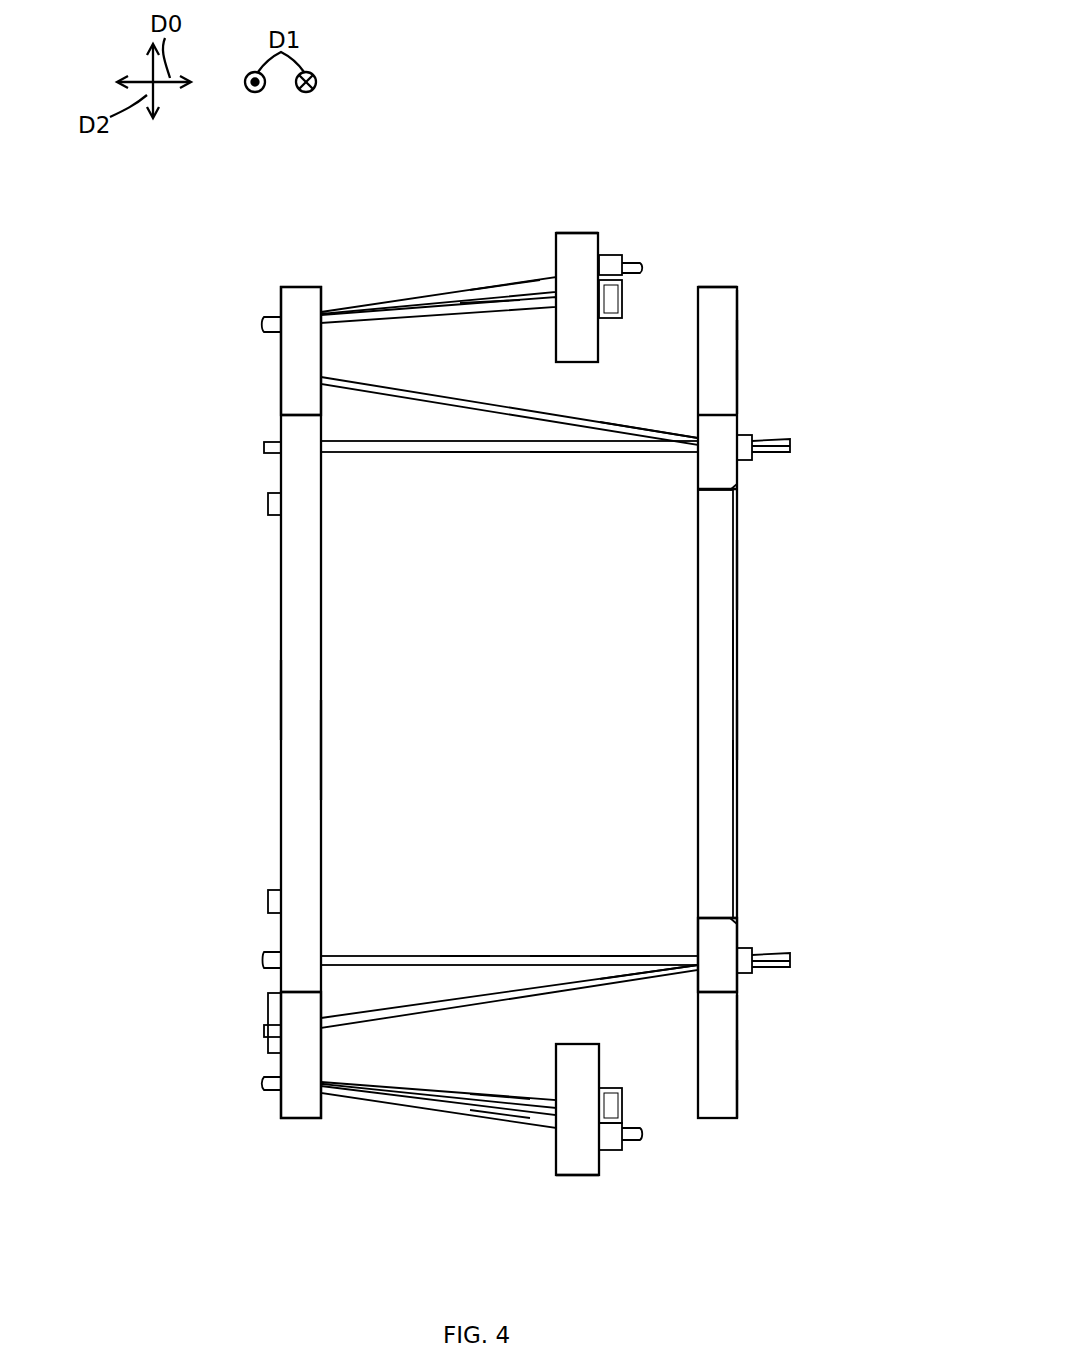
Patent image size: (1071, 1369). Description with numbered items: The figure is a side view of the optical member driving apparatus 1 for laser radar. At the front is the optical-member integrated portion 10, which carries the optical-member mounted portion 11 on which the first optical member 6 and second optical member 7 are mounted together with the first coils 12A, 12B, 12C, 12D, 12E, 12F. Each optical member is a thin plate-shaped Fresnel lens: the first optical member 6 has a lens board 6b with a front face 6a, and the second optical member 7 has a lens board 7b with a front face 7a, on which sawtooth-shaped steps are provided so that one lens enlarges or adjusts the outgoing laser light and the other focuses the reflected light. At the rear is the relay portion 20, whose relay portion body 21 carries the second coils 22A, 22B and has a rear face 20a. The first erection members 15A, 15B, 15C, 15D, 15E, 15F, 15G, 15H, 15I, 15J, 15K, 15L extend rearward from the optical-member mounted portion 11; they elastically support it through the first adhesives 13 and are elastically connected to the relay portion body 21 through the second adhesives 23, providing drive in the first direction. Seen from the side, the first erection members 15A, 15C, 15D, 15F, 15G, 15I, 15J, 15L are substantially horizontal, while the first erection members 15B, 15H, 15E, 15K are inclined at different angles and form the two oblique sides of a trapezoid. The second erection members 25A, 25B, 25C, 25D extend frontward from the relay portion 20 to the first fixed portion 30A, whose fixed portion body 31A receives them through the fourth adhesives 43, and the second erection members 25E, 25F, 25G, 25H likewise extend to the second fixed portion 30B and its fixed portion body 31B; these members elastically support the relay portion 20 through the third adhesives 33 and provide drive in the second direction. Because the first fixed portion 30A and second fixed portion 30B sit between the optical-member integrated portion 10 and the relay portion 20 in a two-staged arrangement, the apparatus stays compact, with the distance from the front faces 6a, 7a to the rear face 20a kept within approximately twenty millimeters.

The optical member driving apparatus for laser radar 1 is at (808, 222).
The first optical member 6 is at (712, 607).
The front face of first optical member 6a is at (737, 573).
The lens board of first optical member 6b is at (716, 648).
The second optical member 7 is at (716, 762).
The front face of second optical member 7a is at (737, 724).
The lens board of second optical member 7b is at (716, 802).
The optical-member integrated portion 10 is at (742, 520).
The optical-member mounted portion 11 is at (720, 940).
The first coil 12A is at (720, 318).
The first coil 12B is at (720, 332).
The first coil 12C is at (720, 360).
The first coil 12D is at (720, 1048).
The first coil 12E is at (720, 1065).
The first coil 12F is at (720, 1088).
The first adhesive 13 is at (760, 440).
The first erection member 15A is at (388, 455).
The first erection member 15B is at (618, 426).
The first erection member 15C is at (462, 455).
The first erection member 15D is at (557, 455).
The first erection member 15E is at (640, 430).
The first erection member 15F is at (620, 455).
The first erection member 15G is at (388, 955).
The first erection member 15H is at (612, 982).
The first erection member 15I is at (462, 955).
The first erection member 15J is at (557, 955).
The first erection member 15K is at (640, 978).
The first erection member 15L is at (622, 955).
The relay portion 20 is at (278, 647).
The rear face of relay portion 20a is at (280, 695).
The relay portion body 21 is at (296, 748).
The second coil 22A is at (300, 349).
The second coil 22B is at (300, 1062).
The second adhesive 23 is at (278, 458).
The second erection member 25A is at (412, 318).
The second erection member 25B is at (432, 300).
The second erection member 25C is at (497, 285).
The second erection member 25D is at (482, 310).
The second erection member 25E is at (412, 1093).
The second erection member 25F is at (455, 1108).
The second erection member 25G is at (500, 1120).
The second erection member 25H is at (490, 1093).
The first fixed portion 30A is at (562, 232).
The second fixed portion 30B is at (557, 1176).
The fixed portion body 31A is at (576, 244).
The fixed portion body 31B is at (578, 1180).
The third adhesive 33 is at (280, 320).
The fourth adhesive 43 is at (645, 268).